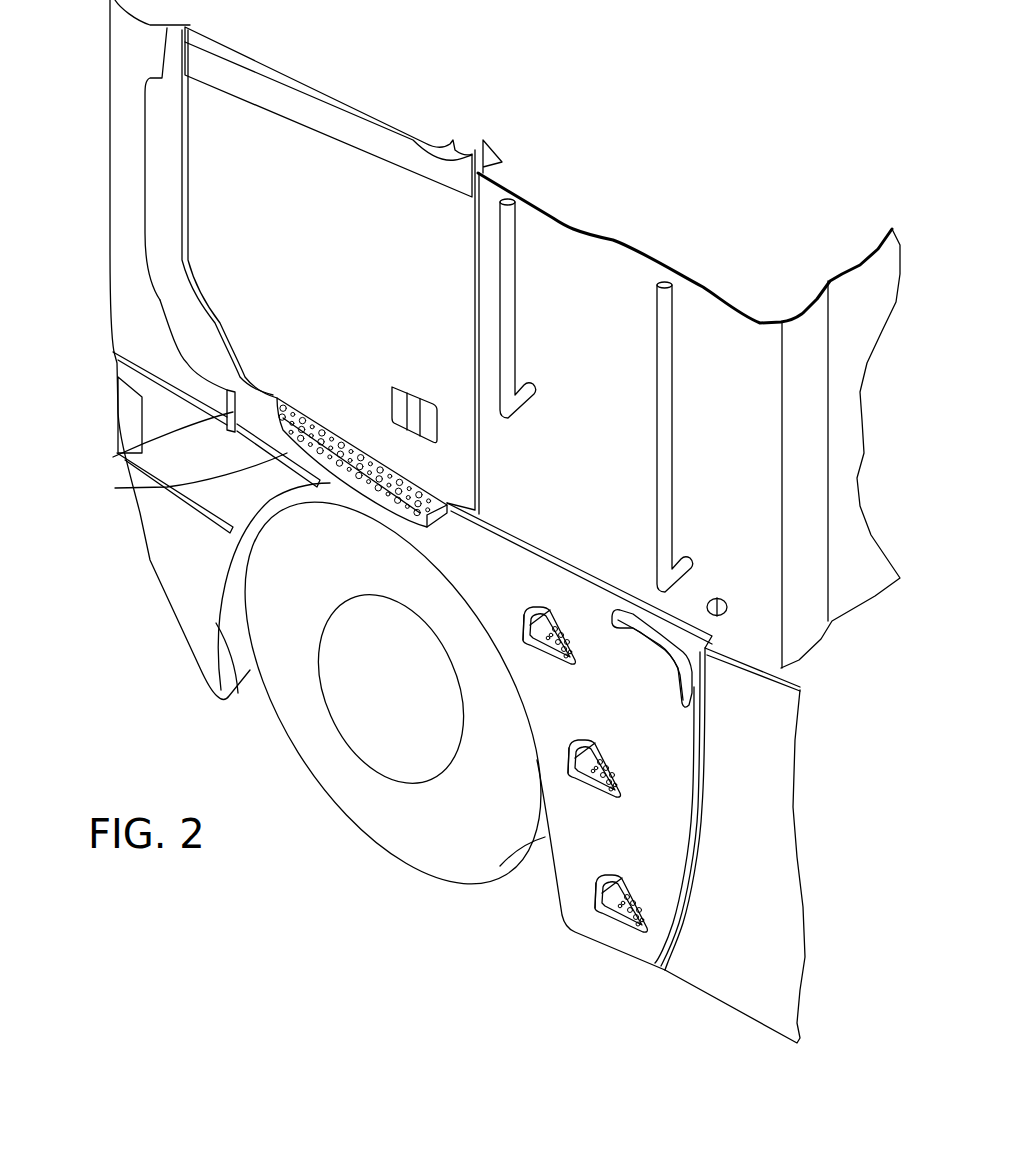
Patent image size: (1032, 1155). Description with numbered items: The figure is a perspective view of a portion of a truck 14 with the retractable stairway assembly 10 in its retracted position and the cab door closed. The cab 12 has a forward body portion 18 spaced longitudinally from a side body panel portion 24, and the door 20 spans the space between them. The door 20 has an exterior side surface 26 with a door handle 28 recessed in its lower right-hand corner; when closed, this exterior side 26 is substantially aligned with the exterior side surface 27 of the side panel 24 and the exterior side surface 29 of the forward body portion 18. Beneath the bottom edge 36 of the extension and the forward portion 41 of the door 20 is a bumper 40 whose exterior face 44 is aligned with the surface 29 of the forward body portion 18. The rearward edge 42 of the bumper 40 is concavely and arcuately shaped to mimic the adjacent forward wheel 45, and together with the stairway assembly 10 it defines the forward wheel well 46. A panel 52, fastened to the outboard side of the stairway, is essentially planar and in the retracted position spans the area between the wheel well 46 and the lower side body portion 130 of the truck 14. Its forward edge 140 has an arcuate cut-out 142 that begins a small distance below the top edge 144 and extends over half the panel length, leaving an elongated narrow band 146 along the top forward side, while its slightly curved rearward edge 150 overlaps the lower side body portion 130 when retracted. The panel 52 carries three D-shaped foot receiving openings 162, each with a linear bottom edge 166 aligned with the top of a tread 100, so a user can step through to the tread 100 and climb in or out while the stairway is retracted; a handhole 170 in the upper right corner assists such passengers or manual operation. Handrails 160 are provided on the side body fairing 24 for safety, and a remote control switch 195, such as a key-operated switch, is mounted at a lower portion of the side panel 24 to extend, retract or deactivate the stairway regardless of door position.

The stairway assembly 10 is at (540, 945).
The cab 12 is at (553, 213).
The truck 14 is at (862, 467).
The forward body portion 18 is at (105, 267).
The door 20 is at (305, 83).
The side body panel portion 24 is at (720, 295).
The exterior side surface 26 is at (381, 203).
The exterior side surface 27 is at (610, 275).
The door handle 28 is at (406, 385).
The exterior side surface 29 is at (130, 63).
The bottom edge 36 is at (167, 395).
The bumper 40 is at (148, 505).
The forward portion 41 is at (265, 373).
The rearward edge 42 is at (239, 693).
The exterior face 44 is at (195, 525).
The forward wheel 45 is at (310, 798).
The forward wheel well 46 is at (262, 525).
The panel 52 is at (557, 870).
The tread 100 is at (561, 627).
The lower side body portion 130 is at (710, 1003).
The forward edge 140 is at (194, 419).
The arcuate cut-out 142 is at (490, 660).
The top edge 144 is at (273, 393).
The band 146 is at (177, 493).
The rearward edge 150 is at (705, 812).
The handrails 160 is at (510, 353).
The foot receiving openings 162 is at (578, 648).
The bottom edge 166 is at (567, 650).
The handhole 170 is at (690, 680).
The remote control switch 195 is at (717, 593).